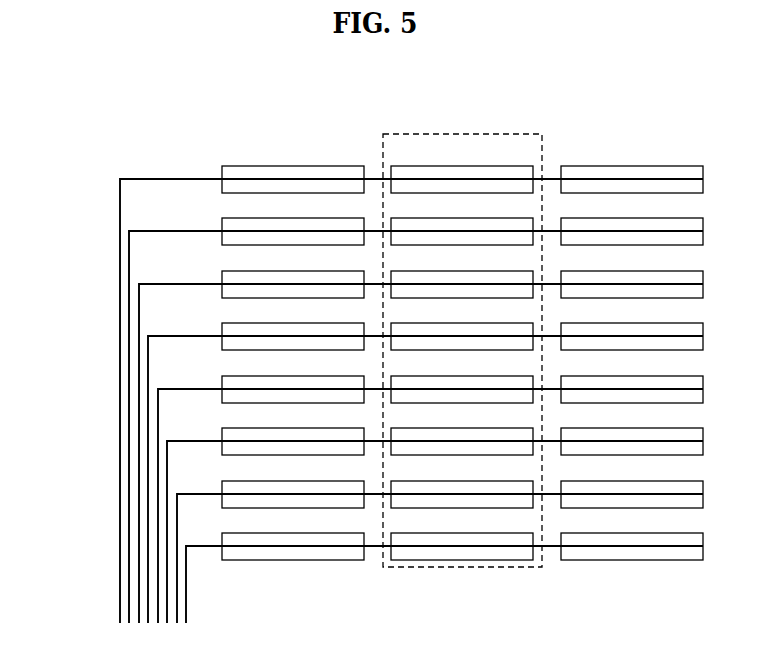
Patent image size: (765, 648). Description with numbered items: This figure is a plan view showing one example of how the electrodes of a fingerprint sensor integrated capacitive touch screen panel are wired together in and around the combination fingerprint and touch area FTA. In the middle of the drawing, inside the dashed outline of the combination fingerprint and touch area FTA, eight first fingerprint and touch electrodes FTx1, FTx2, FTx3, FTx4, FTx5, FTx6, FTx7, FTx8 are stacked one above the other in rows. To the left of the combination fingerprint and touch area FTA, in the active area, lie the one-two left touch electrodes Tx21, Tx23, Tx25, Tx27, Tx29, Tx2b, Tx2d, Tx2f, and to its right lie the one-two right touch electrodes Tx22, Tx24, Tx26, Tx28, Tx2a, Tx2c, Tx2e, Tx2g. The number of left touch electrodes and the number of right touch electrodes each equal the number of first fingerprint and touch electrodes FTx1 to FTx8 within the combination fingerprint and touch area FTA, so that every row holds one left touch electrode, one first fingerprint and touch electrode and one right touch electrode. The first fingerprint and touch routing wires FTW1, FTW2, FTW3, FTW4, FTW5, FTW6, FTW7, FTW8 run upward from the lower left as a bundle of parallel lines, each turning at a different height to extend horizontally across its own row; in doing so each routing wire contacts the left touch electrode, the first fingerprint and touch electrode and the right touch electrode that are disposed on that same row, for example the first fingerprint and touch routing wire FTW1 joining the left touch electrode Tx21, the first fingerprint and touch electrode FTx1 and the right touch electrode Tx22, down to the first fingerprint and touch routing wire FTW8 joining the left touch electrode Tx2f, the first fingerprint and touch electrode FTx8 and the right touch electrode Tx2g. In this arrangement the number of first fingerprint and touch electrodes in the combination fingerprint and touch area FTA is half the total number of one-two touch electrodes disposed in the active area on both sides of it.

The combination fingerprint and touch area FTA is at (455, 134).
The first fingerprint and touch routing wire FTW1 is at (120, 389).
The first fingerprint and touch routing wire FTW2 is at (129, 418).
The first fingerprint and touch routing wire FTW3 is at (139, 447).
The first fingerprint and touch routing wire FTW4 is at (148, 476).
The first fingerprint and touch routing wire FTW5 is at (158, 505).
The first fingerprint and touch routing wire FTW6 is at (167, 534).
The first fingerprint and touch routing wire FTW7 is at (177, 563).
The first fingerprint and touch routing wire FTW8 is at (186, 592).
The first fingerprint and touch electrode FTx1 is at (445, 166).
The first fingerprint and touch electrode FTx2 is at (445, 218).
The first fingerprint and touch electrode FTx3 is at (445, 271).
The first fingerprint and touch electrode FTx4 is at (445, 323).
The first fingerprint and touch electrode FTx5 is at (445, 376).
The first fingerprint and touch electrode FTx6 is at (445, 428).
The first fingerprint and touch electrode FTx7 is at (445, 481).
The first fingerprint and touch electrode FTx8 is at (445, 533).
The 1-2 left touch electrode Tx21 is at (276, 166).
The 1-2 right touch electrode Tx22 is at (615, 166).
The 1-2 left touch electrode Tx23 is at (276, 218).
The 1-2 right touch electrode Tx24 is at (615, 218).
The 1-2 left touch electrode Tx25 is at (276, 271).
The 1-2 right touch electrode Tx26 is at (615, 271).
The 1-2 left touch electrode Tx27 is at (276, 323).
The 1-2 right touch electrode Tx28 is at (615, 323).
The 1-2 left touch electrode Tx29 is at (276, 376).
The 1-2 right touch electrode Tx2a is at (615, 376).
The 1-2 left touch electrode Tx2b is at (276, 428).
The 1-2 right touch electrode Tx2c is at (615, 428).
The 1-2 left touch electrode Tx2d is at (276, 481).
The 1-2 right touch electrode Tx2e is at (615, 481).
The 1-2 left touch electrode Tx2f is at (276, 533).
The 1-2 right touch electrode Tx2g is at (615, 533).